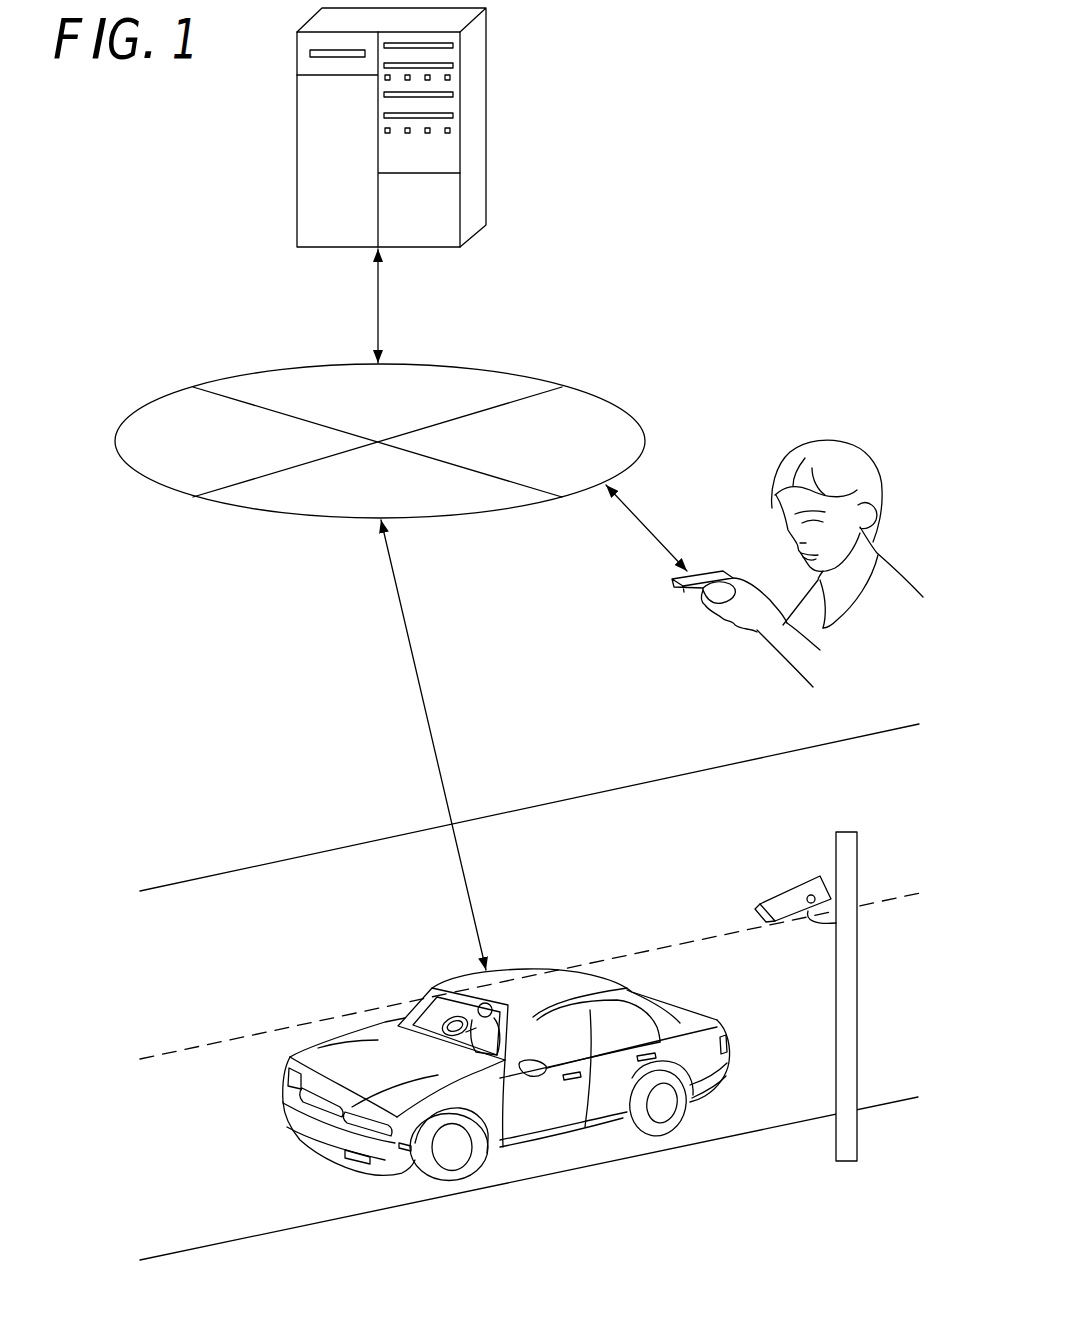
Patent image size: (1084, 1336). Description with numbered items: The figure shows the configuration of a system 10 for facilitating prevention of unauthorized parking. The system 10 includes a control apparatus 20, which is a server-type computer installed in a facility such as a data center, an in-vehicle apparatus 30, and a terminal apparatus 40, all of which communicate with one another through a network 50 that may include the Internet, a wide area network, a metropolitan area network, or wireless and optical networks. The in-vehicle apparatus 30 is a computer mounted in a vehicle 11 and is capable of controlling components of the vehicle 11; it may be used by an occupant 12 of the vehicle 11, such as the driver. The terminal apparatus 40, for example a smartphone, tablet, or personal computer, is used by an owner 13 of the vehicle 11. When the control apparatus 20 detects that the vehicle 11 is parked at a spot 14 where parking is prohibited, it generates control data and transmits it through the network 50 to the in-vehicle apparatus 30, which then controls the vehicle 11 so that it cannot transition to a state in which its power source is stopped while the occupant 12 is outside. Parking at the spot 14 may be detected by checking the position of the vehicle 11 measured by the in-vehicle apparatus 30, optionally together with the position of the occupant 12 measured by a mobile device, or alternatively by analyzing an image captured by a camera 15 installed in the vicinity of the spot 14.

The system 10 is at (817, 48).
The vehicle 11 is at (540, 1113).
The occupant 12 is at (522, 1010).
The owner 13 is at (893, 566).
The spot 14 is at (607, 1165).
The camera 15 is at (784, 888).
The control apparatus 20 is at (475, 133).
The in-vehicle apparatus 30 is at (460, 1037).
The terminal apparatus 40 is at (680, 588).
The network 50 is at (613, 403).